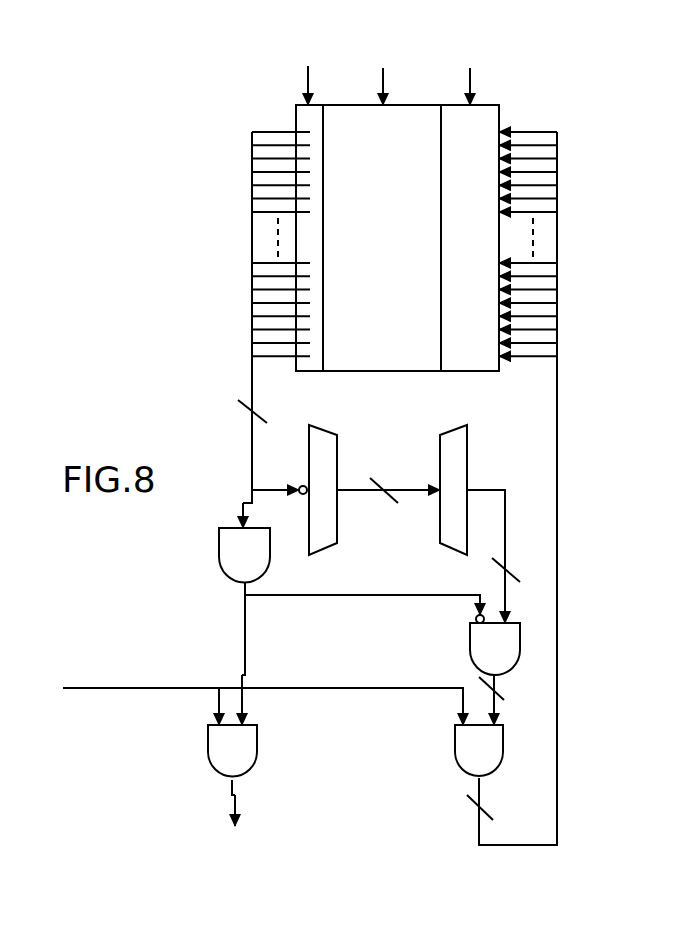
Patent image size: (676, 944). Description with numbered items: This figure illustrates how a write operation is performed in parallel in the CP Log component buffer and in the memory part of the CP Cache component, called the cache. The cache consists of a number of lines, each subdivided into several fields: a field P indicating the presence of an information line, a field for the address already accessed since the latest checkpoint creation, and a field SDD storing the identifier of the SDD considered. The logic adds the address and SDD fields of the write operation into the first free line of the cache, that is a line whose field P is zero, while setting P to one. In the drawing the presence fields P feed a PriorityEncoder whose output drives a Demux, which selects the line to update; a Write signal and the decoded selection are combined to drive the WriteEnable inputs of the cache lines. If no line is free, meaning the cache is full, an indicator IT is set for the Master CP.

The field P is at (310, 87).
The field SDD is at (470, 88).
The write enable lines WriteEnable is at (561, 233).
The priority encoder PriorityEncoder is at (319, 469).
The demultiplexer Demux is at (456, 477).
The write signal Write is at (263, 697).
The IT (cache full) output IT is at (224, 811).